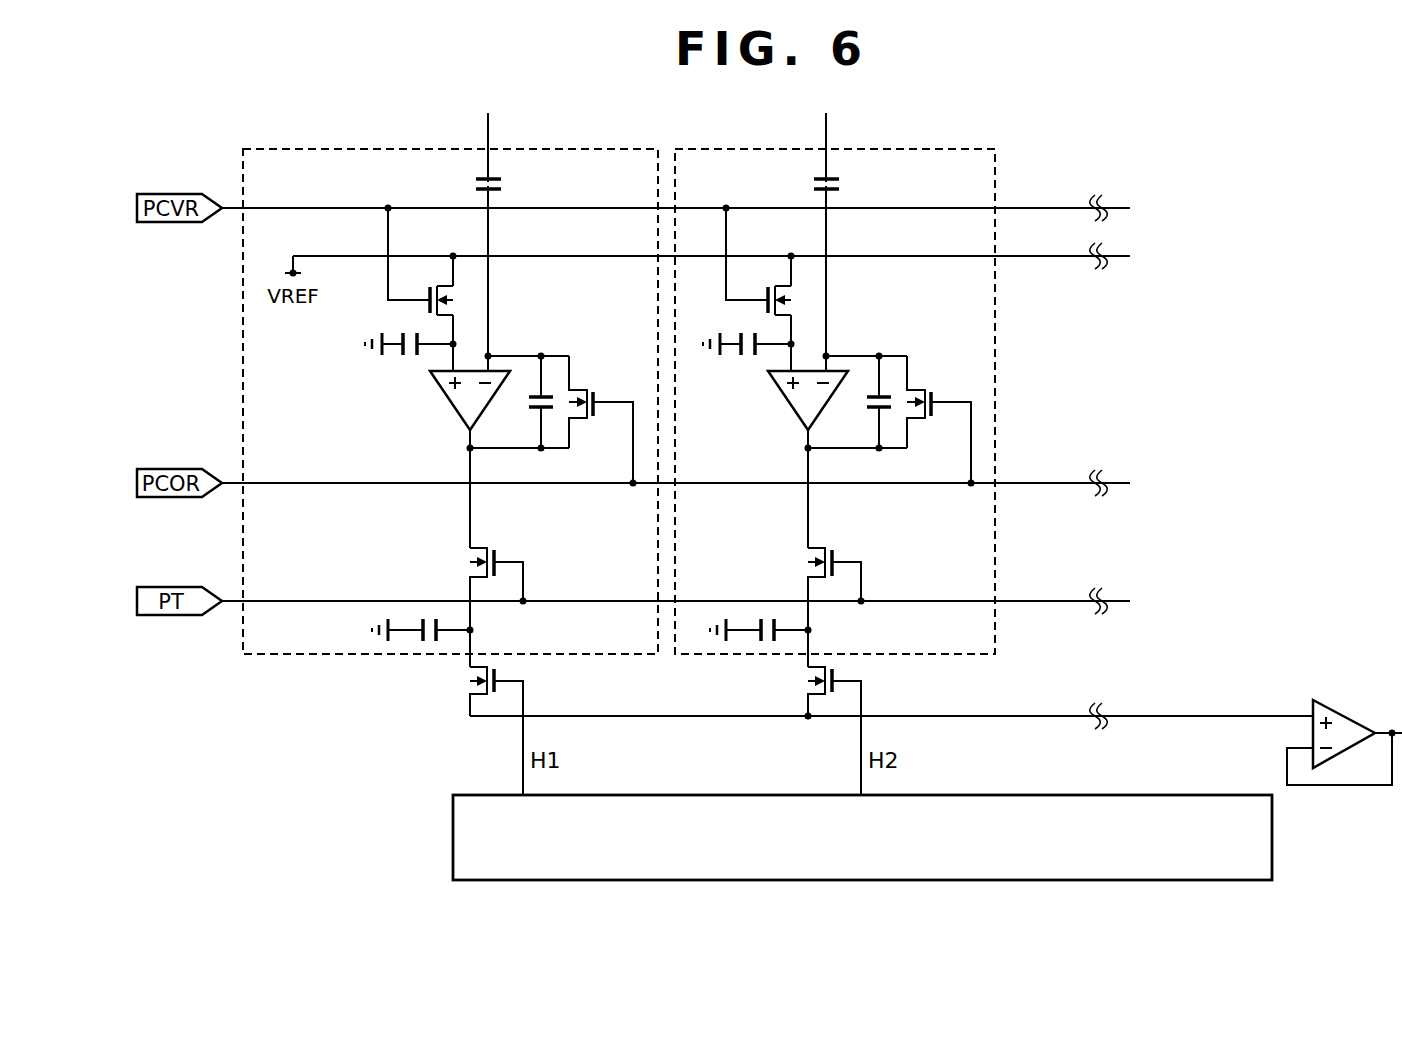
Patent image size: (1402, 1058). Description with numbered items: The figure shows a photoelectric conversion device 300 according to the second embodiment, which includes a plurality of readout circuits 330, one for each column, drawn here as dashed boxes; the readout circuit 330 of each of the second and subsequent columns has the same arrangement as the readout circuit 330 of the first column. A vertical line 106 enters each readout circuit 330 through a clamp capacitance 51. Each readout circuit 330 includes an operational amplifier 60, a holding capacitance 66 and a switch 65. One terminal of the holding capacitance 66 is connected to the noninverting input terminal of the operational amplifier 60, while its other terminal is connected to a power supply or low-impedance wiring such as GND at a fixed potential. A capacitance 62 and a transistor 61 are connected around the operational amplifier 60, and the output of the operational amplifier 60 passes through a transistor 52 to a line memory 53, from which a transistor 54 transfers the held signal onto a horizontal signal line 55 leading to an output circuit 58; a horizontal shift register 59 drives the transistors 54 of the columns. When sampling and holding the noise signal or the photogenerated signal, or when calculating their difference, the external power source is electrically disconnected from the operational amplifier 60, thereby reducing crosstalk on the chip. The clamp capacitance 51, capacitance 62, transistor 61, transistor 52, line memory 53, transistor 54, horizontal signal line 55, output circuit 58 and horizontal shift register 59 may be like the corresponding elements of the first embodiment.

The vertical output line 106 is at (490, 128).
The clamp capacitance 51 is at (503, 184).
The switch 65 is at (452, 298).
The holding capacitance 66 is at (410, 360).
The operational amplifier 60 is at (455, 418).
The capacitance 62 is at (527, 402).
The transistor 61 is at (590, 426).
The transistor 52 is at (464, 560).
The line memory 53 is at (432, 644).
The transistor 54 is at (468, 686).
The horizontal signal line 55 is at (489, 720).
The output circuit 58 is at (1348, 713).
The horizontal shift register 59 is at (1170, 795).
The readout circuit 330 is at (287, 655).
The photoelectric conversion device 300 is at (298, 832).